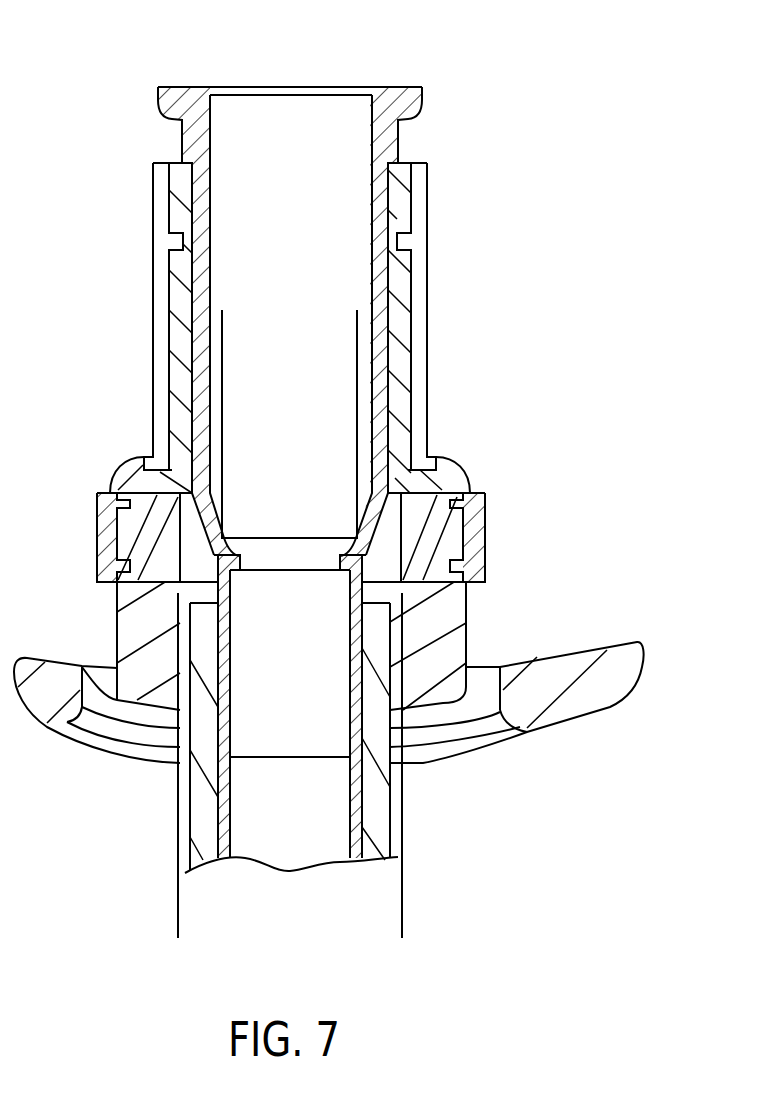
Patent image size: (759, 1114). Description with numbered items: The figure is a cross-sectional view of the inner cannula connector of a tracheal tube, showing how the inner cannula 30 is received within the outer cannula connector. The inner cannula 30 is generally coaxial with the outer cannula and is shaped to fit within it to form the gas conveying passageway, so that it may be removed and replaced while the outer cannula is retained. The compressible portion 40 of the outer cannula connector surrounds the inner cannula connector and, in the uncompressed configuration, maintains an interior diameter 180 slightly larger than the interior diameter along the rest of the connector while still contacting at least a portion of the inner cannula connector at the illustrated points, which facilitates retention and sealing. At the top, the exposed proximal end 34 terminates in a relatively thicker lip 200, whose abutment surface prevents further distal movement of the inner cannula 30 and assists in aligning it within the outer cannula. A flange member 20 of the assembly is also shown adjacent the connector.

The flange member 20 is at (296, 452).
The inner cannula 30 is at (401, 152).
The proximal end 34 is at (361, 80).
The compressible portion 40 is at (486, 537).
The interior diameter 180 is at (402, 919).
The lip 200 is at (158, 92).